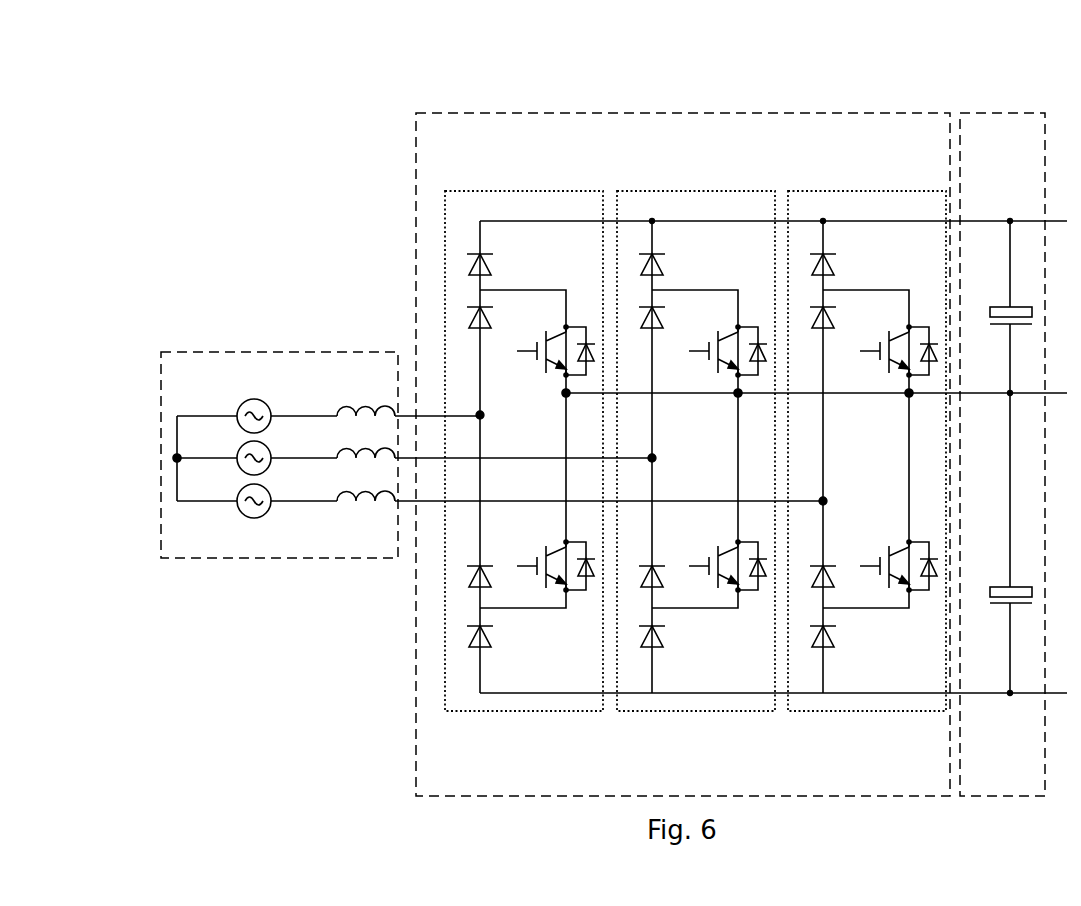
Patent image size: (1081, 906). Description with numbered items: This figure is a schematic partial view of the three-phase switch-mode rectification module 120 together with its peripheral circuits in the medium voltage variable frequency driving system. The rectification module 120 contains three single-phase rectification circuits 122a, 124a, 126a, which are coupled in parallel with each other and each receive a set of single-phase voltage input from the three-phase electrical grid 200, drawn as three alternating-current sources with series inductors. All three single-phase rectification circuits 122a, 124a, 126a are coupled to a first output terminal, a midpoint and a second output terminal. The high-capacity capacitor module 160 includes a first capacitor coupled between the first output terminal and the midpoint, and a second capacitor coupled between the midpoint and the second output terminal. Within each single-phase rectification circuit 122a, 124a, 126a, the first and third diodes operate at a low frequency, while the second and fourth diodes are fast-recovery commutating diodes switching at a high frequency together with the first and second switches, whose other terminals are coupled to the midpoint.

The three-phase switch-mode rectification module 120 is at (741, 414).
The single-phase rectification circuit 122a is at (538, 190).
The single-phase rectification circuit 124a is at (714, 190).
The single-phase rectification circuit 126a is at (891, 190).
The high-capacity capacitor module 160 is at (990, 113).
The three-phase electrical grid 200 is at (309, 352).